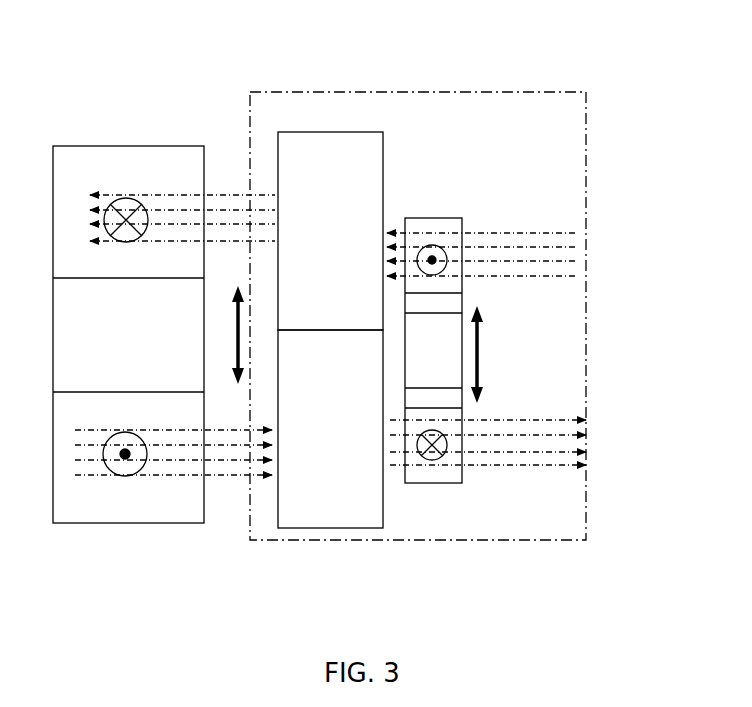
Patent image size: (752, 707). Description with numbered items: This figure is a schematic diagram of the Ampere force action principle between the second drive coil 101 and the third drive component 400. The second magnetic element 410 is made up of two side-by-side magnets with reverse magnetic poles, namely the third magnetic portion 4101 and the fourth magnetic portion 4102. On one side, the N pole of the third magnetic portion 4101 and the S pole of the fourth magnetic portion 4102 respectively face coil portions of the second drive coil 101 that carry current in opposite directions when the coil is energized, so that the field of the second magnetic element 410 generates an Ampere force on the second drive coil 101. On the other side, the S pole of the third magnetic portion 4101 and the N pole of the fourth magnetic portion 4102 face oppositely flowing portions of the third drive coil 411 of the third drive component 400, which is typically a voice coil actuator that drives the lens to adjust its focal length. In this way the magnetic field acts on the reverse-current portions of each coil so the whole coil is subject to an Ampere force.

The second drive coil 101 is at (105, 163).
The third drive component 400 is at (425, 92).
The second magnetic element 410 is at (496, 330).
The third magnetic portion 4101 is at (350, 155).
The fourth magnetic portion 4102 is at (352, 378).
The third drive coil 411 is at (448, 470).